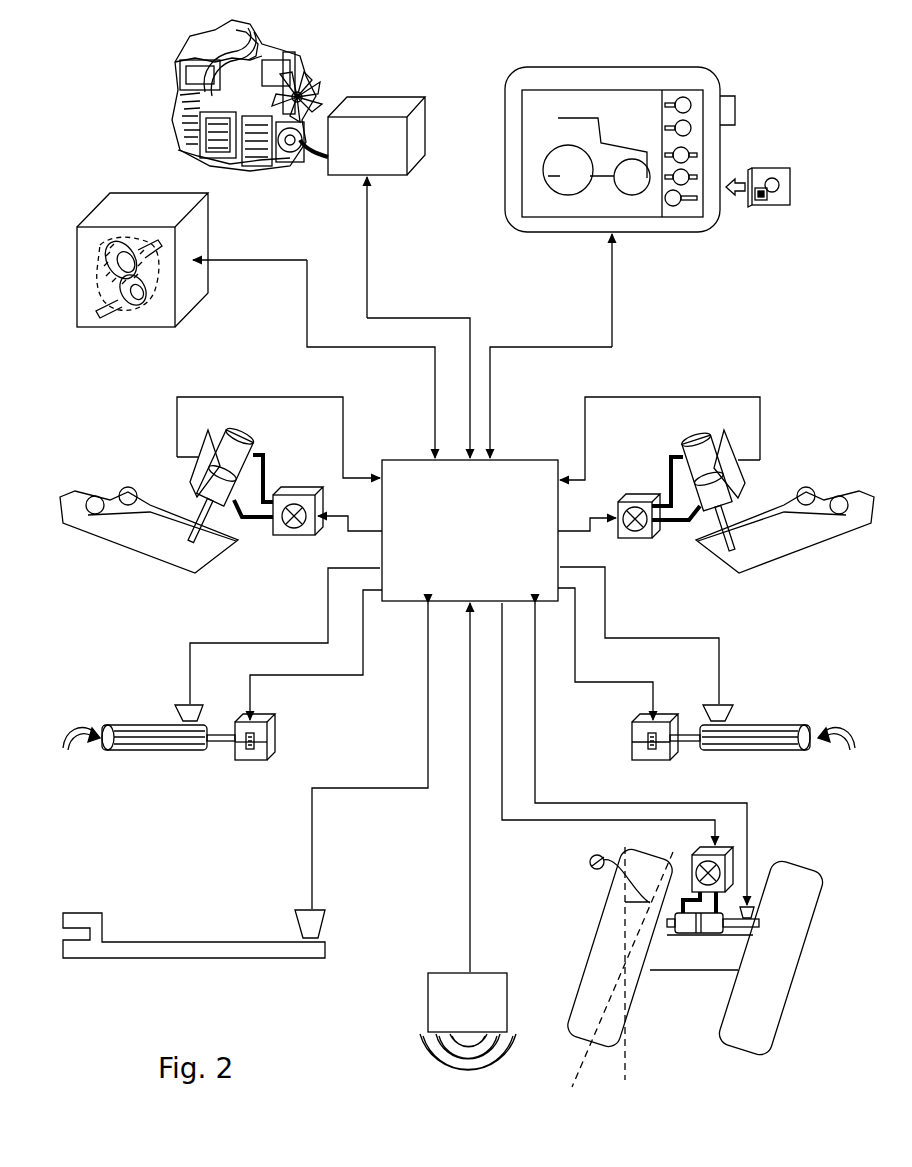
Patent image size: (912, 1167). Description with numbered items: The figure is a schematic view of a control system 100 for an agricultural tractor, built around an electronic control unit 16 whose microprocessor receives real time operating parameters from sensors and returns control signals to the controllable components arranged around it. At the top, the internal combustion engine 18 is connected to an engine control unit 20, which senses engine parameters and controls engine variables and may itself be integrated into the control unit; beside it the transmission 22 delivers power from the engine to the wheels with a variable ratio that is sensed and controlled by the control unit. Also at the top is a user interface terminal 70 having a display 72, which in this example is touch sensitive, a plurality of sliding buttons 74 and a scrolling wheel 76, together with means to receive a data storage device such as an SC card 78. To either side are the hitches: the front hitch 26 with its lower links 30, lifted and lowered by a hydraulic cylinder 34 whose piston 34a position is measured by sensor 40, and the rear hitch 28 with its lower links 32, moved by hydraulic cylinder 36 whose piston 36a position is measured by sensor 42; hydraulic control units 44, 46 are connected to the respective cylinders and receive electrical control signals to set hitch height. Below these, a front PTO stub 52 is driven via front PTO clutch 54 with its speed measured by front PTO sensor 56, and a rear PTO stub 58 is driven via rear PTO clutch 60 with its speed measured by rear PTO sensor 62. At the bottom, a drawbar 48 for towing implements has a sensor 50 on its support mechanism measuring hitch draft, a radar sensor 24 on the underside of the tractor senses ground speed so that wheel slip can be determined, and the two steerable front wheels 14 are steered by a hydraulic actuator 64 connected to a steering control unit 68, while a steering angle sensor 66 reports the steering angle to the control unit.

The control system 100 is at (68, 84).
The steerable front wheels 14 is at (598, 952).
The electronic control unit (ECU) 16 is at (523, 460).
The internal combustion engine 18 is at (302, 84).
The engine control unit 20 is at (414, 99).
The transmission 22 is at (77, 327).
The radar sensor 24 is at (440, 973).
The front hitch 26 is at (830, 562).
The rear hitch 28 is at (84, 566).
The front lower links 30 is at (857, 496).
The rear lower links 32 is at (108, 490).
The front hydraulic cylinder 34 is at (684, 440).
The front cylinder piston 34a is at (706, 486).
The rear hydraulic cylinder 36 is at (246, 440).
The rear cylinder piston 36a is at (236, 516).
The front hitch position sensor 40 is at (738, 470).
The rear hitch position sensor 42 is at (193, 472).
The front hydraulic control unit 44 is at (630, 496).
The rear hydraulic control unit 46 is at (302, 494).
The drawbar 48 is at (156, 946).
The draft sensor 50 is at (318, 918).
The front PTO stub 52 is at (788, 751).
The front PTO clutch 54 is at (637, 758).
The front PTO sensor 56 is at (728, 710).
The rear PTO stub 58 is at (160, 751).
The rear PTO clutch 60 is at (260, 761).
The rear PTO sensor 62 is at (185, 712).
The hydraulic steering actuator 64 is at (690, 936).
The steering angle sensor 66 is at (752, 906).
The steering control unit 68 is at (692, 858).
The terminal 70 is at (643, 123).
The display 72 is at (636, 90).
The sliding buttons 74 is at (689, 128).
The scrolling wheel 76 is at (736, 110).
The SC card 78 is at (785, 203).